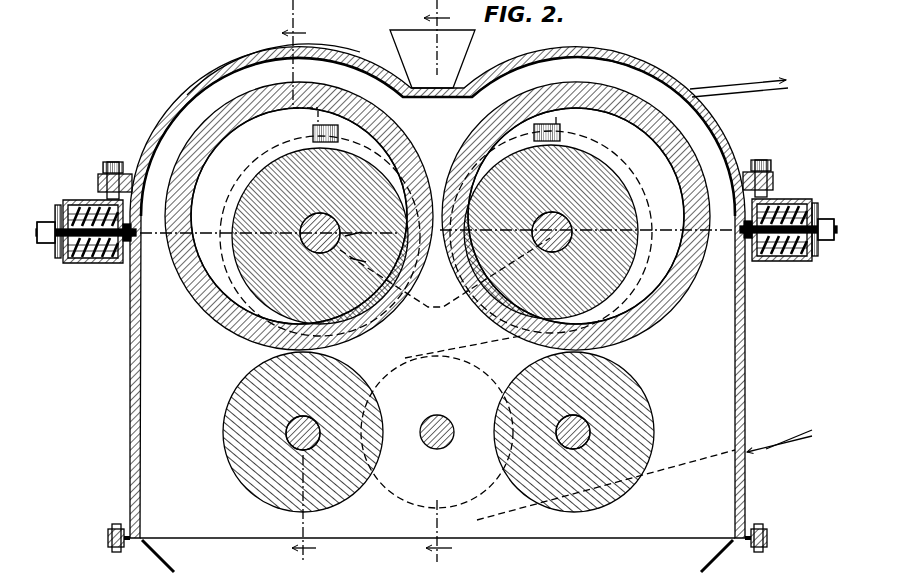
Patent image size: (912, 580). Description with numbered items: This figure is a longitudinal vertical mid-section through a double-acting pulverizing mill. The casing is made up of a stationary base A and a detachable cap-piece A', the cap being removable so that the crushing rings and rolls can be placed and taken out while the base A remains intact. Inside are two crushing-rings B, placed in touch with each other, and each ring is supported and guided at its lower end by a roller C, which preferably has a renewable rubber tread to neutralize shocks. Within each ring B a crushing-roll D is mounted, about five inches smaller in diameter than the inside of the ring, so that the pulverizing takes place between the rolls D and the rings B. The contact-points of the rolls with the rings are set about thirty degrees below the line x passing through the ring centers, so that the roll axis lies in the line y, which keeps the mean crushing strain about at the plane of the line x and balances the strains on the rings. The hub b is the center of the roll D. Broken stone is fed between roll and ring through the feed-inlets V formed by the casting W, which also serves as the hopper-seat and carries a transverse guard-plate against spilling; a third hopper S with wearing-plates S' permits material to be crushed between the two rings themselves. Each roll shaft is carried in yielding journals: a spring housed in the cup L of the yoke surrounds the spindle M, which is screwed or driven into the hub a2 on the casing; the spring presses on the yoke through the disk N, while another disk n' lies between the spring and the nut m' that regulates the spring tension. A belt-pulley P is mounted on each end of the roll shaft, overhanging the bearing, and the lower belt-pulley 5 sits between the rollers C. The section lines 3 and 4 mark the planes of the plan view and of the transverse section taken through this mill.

The stationary base A is at (435, 309).
The cap-piece A' is at (264, 69).
The crushing-ring B is at (232, 114).
The roller C is at (438, 432).
The crushing-roll D is at (436, 233).
The third hopper S is at (432, 59).
The wearing-plates S' is at (446, 72).
The belt-pulley P is at (434, 275).
The separate casting W is at (313, 126).
The feed-inlet V is at (449, 131).
The roll shaft b is at (436, 232).
The line through ring centers x is at (445, 262).
The line of crushing-roll axis y is at (364, 267).
The section line 3 3 is at (437, 232).
The section line 4 4 is at (299, 290).
The belt-pulley 5 is at (464, 366).
The cup L is at (93, 222).
The spindle M is at (85, 264).
The disk N is at (768, 262).
The disk n' is at (49, 220).
The nut m' is at (41, 251).
The hub a2 is at (128, 262).